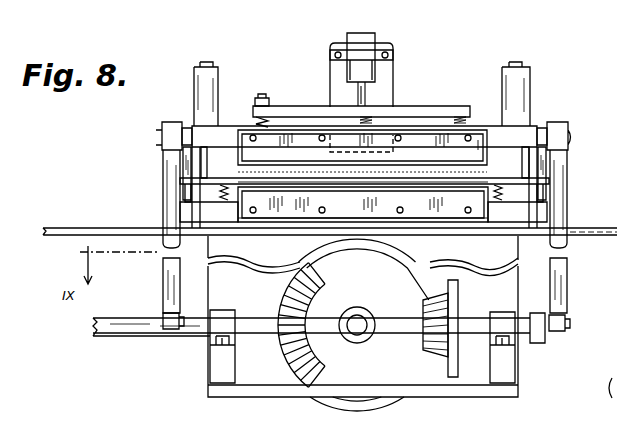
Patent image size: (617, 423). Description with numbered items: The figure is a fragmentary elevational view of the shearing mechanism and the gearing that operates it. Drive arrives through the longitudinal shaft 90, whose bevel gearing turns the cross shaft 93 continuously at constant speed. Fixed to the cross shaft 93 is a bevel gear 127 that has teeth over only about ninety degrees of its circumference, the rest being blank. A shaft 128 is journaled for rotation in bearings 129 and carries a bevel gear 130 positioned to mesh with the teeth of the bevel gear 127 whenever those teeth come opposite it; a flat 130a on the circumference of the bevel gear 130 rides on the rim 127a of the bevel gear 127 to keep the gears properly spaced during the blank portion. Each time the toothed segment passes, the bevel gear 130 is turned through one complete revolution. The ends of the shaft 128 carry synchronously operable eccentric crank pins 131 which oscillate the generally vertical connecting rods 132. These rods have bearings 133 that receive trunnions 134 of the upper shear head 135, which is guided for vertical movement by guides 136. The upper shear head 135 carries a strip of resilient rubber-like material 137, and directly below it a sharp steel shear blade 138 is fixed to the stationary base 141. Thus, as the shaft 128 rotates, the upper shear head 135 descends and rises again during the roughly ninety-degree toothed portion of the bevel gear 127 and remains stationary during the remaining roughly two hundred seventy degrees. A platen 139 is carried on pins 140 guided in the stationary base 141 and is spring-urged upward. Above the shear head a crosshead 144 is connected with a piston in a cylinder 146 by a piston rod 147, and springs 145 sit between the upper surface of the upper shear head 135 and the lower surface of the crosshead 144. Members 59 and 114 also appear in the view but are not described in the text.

The cylinder 146 is at (378, 42).
The piston rod 147 is at (363, 93).
The upper shear head 135 is at (425, 130).
The crosshead 144 is at (322, 108).
The springs 145 is at (272, 122).
The bearings 133 is at (170, 128).
The trunnions 134 is at (162, 136).
The guides 136 is at (207, 166).
The connecting rods 132 is at (172, 190).
The platen 139 is at (217, 187).
The stationary base 141 is at (223, 214).
The strip of resilient rubber-like material 137 is at (326, 163).
The bar 59 is at (378, 178).
The shear blade 138 is at (420, 193).
The pins 140 is at (540, 214).
The eccentric crank pins 131 is at (163, 320).
The longitudinal shaft 90 is at (138, 328).
The bearings 129 is at (227, 320).
The bevel gear 127 is at (296, 308).
The rim 127a is at (402, 412).
The shaft 128 is at (367, 338).
The cross shaft 93 is at (366, 319).
The bevel gear 130 is at (438, 343).
The flat 130a is at (458, 372).
The member 114 is at (604, 378).